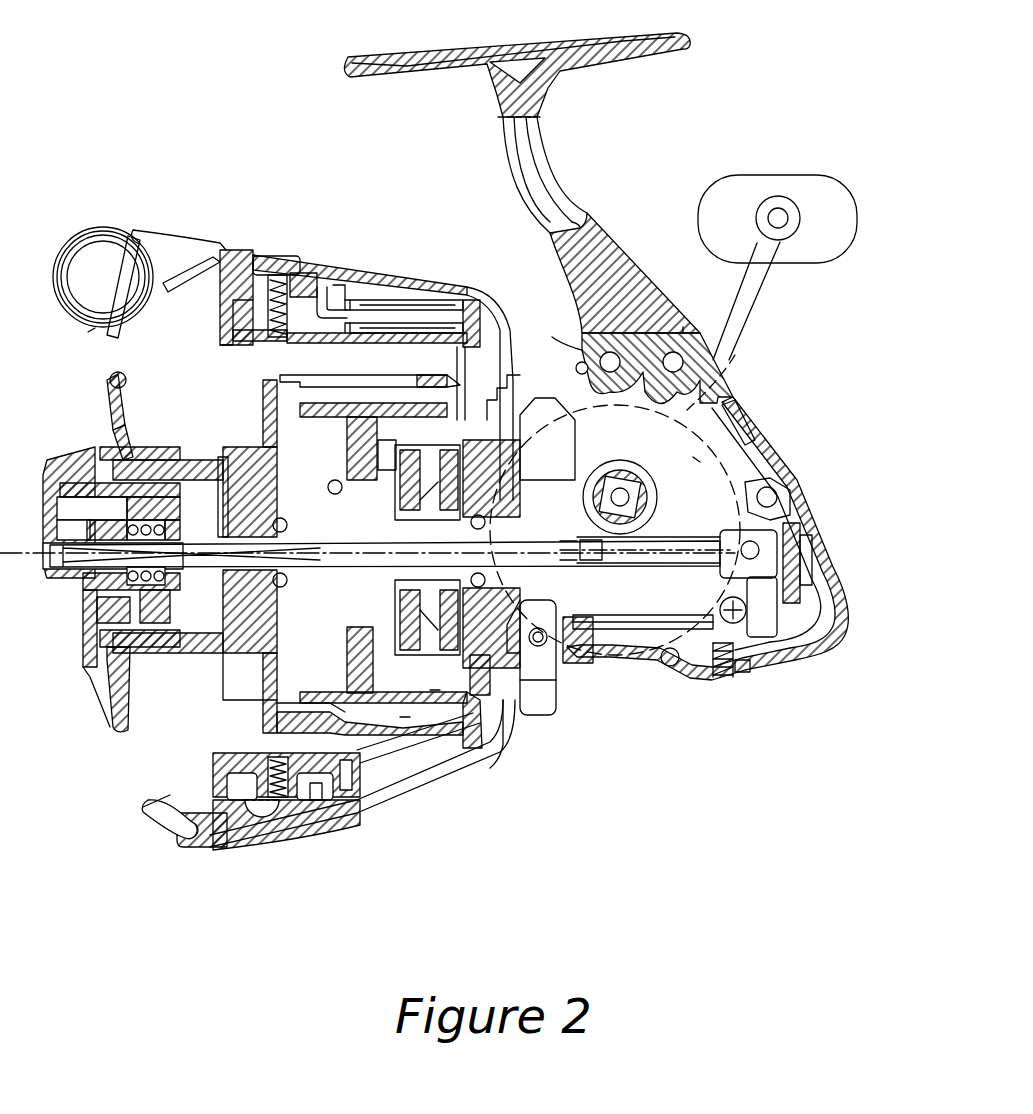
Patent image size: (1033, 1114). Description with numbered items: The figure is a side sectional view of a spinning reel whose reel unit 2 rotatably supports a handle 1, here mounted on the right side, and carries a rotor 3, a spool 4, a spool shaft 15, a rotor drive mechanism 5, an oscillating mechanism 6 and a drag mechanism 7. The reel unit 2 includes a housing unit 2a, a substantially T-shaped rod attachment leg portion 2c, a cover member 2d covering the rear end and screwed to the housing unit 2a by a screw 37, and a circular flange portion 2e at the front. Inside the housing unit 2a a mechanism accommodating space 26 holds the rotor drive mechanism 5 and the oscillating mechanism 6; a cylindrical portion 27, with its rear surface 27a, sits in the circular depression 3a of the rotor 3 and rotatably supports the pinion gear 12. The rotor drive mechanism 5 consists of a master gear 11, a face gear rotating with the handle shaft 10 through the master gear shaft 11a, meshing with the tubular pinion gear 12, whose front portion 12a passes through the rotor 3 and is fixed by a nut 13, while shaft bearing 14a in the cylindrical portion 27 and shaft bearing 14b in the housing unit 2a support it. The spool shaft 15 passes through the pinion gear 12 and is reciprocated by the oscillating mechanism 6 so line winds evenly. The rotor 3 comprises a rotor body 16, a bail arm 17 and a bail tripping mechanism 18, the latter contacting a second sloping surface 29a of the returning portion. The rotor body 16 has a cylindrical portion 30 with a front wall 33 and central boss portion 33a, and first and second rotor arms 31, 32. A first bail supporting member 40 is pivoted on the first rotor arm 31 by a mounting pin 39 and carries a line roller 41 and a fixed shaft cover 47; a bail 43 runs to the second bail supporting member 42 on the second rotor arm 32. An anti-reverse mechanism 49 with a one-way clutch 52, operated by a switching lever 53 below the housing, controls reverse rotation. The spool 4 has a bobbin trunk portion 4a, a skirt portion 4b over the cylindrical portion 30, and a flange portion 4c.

The handle 1 is at (757, 243).
The reel unit 2 is at (645, 240).
The housing unit 2a is at (735, 375).
The rod attachment leg portion 2c is at (542, 168).
The cover member 2d is at (790, 495).
The flange portion 2e is at (540, 372).
The rotor 3 is at (385, 290).
The circular depression 3a is at (475, 748).
The spool 4 is at (190, 430).
The bobbin trunk portion 4a is at (240, 450).
The skirt portion 4b is at (285, 256).
The flange portion 4c is at (126, 380).
The rotor drive mechanism 5 is at (693, 457).
The oscillating mechanism 6 is at (660, 632).
The drag mechanism 7 is at (180, 640).
The handle shaft 10 is at (640, 470).
The master gear 11 is at (735, 357).
The master gear shaft 11a is at (603, 475).
The pinion gear 12 is at (530, 685).
The front portion 12a is at (340, 520).
The nut 13 is at (265, 675).
The shaft bearing 14a is at (510, 700).
The shaft bearing 14b is at (556, 670).
The spool shaft 15 is at (713, 677).
The rotor body 16 is at (403, 717).
The bail arm 17 is at (92, 329).
The bail tripping mechanism 18 is at (393, 370).
The mechanism accommodating space 26 is at (683, 327).
The cylindrical portion 27 is at (483, 440).
The rear surface 27a is at (525, 620).
The second sloping surface 29a is at (700, 545).
The cylindrical portion 30 is at (307, 387).
The first rotor arm 31 is at (430, 300).
The second rotor arm 32 is at (340, 765).
The front wall 33 is at (355, 437).
The boss portion 33a is at (340, 640).
The screw 37 is at (748, 672).
The mounting pin 39 is at (290, 256).
The first bail supporting member 40 is at (240, 250).
The line roller 41 is at (90, 233).
The second bail supporting member 42 is at (300, 818).
The bail 43 is at (133, 233).
The fixed shaft cover 47 is at (103, 257).
The anti-reverse mechanism 49 is at (433, 690).
The one-way clutch 52 is at (480, 300).
The switching lever 53 is at (547, 680).